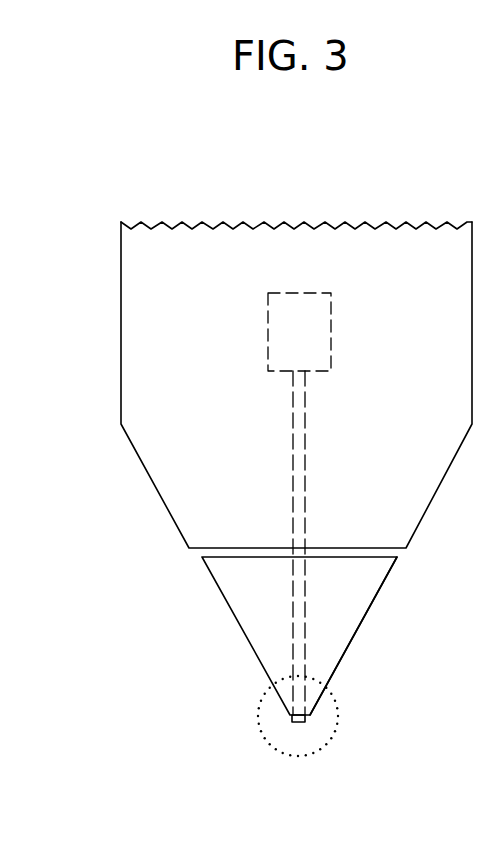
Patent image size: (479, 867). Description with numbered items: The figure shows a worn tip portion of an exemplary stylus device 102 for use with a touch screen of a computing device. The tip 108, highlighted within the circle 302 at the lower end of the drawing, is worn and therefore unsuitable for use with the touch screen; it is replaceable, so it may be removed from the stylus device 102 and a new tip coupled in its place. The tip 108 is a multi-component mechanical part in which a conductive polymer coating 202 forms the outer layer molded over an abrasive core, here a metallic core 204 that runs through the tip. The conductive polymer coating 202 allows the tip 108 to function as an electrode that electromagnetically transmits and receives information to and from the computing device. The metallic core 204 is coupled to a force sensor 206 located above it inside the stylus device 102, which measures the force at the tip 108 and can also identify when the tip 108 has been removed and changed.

The stylus device 102 is at (136, 370).
The tip 108 is at (222, 594).
The conductive polymer coating 202 is at (352, 635).
The metallic core 204 is at (307, 588).
The force sensor 206 is at (331, 343).
The circle 302 is at (328, 742).